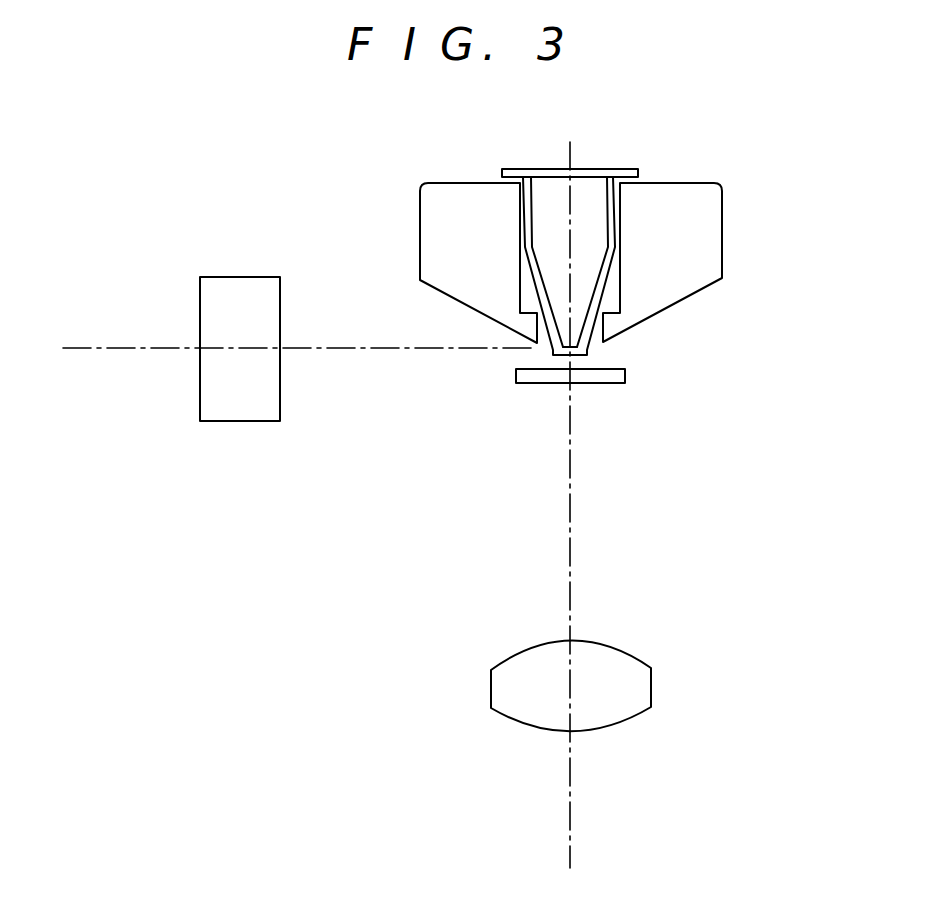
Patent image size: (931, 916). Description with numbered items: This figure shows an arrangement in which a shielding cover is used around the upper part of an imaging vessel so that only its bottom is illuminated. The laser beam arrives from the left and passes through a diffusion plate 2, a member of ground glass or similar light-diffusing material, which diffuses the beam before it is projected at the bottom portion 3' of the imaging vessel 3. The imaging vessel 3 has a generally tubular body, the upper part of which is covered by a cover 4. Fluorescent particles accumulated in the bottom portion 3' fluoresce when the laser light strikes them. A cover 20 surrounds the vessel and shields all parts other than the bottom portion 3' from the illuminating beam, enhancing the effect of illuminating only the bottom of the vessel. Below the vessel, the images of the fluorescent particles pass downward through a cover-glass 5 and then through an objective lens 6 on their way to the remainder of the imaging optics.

The diffusion plate 2 is at (242, 277).
The imaging vessel 3 is at (649, 266).
The bottom portion of the imaging vessel 3' is at (636, 356).
The cover 4 is at (592, 172).
The cover-glass 5 is at (533, 385).
The objective lens 6 is at (640, 658).
The cover 20 is at (700, 233).